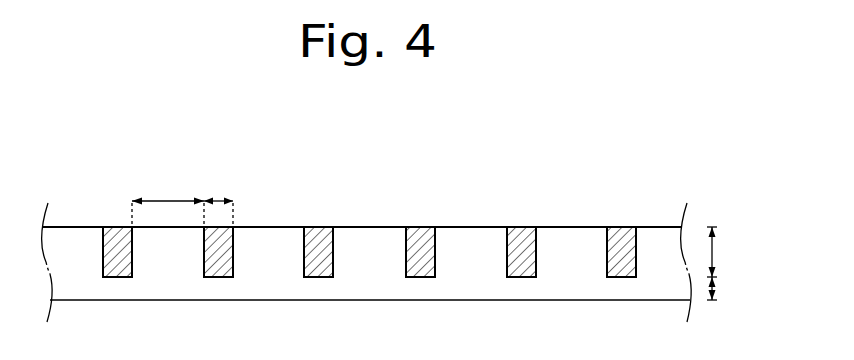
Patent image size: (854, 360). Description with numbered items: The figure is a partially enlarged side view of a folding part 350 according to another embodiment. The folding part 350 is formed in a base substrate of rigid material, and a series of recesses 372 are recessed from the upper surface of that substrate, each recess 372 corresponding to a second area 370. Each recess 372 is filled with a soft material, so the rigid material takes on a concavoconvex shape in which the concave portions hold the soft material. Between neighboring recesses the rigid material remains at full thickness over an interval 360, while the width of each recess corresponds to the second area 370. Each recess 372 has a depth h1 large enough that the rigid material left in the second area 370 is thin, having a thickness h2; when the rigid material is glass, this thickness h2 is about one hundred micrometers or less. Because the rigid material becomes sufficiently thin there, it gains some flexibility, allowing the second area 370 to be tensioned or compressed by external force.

The folding part 350 is at (366, 222).
The pitch between protrusions 360 is at (168, 199).
The second area 370 is at (220, 199).
The recess 372 is at (330, 248).
The depth of recess h1 is at (725, 252).
The thickness of rigid material h2 is at (725, 289).